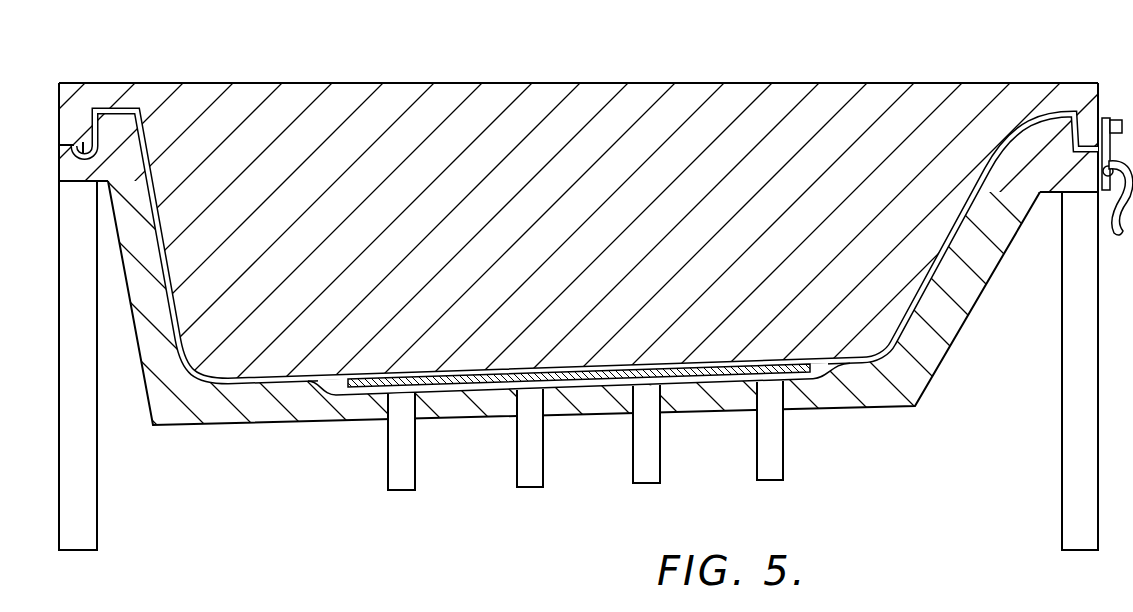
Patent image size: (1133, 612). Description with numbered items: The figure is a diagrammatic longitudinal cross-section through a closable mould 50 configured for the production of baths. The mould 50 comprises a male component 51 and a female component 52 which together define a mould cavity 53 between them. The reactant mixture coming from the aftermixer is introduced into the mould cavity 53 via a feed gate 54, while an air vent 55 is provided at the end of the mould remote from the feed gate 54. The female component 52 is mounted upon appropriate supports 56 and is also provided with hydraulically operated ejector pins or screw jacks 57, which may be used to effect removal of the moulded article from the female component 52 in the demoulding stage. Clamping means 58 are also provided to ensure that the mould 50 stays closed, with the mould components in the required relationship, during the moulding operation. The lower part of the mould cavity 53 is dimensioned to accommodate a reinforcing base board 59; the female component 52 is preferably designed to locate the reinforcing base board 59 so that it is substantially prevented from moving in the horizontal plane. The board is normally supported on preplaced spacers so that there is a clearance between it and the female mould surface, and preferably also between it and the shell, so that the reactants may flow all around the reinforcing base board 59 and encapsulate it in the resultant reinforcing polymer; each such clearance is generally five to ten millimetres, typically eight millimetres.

The mould 50 is at (812, 70).
The male component 51 is at (562, 116).
The female component 52 is at (245, 400).
The mould cavity 53 is at (833, 371).
The feed gate 54 is at (83, 152).
The air vent 55 is at (1094, 140).
The supports 56 is at (87, 483).
The ejector pins or screw jacks 57 is at (408, 477).
The clamping means 58 is at (1122, 233).
The reinforcing base board 59 is at (798, 373).